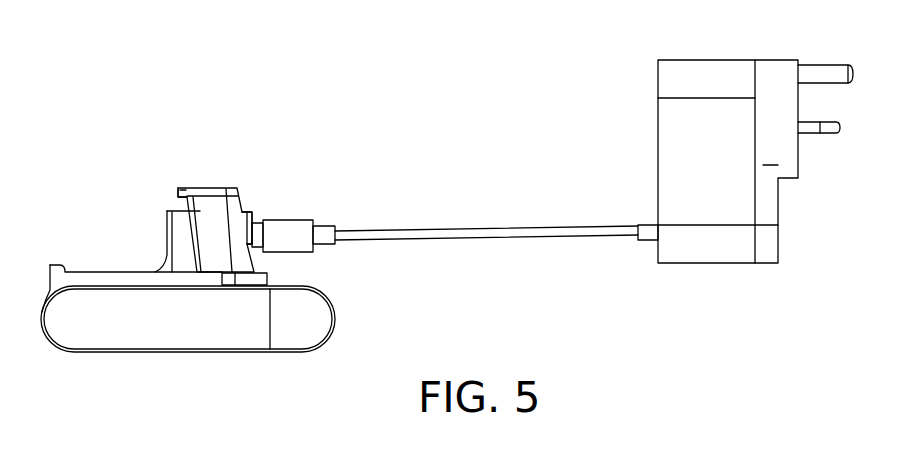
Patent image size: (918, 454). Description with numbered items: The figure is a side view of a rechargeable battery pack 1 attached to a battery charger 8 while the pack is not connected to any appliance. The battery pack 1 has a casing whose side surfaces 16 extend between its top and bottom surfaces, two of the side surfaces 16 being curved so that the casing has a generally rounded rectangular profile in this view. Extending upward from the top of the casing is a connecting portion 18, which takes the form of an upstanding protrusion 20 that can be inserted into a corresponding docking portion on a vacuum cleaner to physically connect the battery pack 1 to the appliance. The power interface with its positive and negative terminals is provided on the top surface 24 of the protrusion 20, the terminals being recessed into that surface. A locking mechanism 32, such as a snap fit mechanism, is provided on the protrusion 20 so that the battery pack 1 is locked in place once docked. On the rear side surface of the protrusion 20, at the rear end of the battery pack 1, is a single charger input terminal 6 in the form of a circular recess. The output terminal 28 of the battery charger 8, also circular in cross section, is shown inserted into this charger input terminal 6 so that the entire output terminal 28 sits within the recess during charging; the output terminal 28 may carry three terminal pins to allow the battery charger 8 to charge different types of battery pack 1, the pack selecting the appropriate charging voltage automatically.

The rechargeable battery pack 1 is at (107, 337).
The side surfaces 16 is at (190, 330).
The connecting portion 18 is at (181, 203).
The protrusion 20 is at (213, 259).
The top surface of the protrusion 24 is at (227, 188).
The locking mechanism 32 is at (180, 209).
The charger input terminal 6 is at (248, 215).
The output terminal 28 is at (259, 233).
The battery charger 8 is at (702, 77).